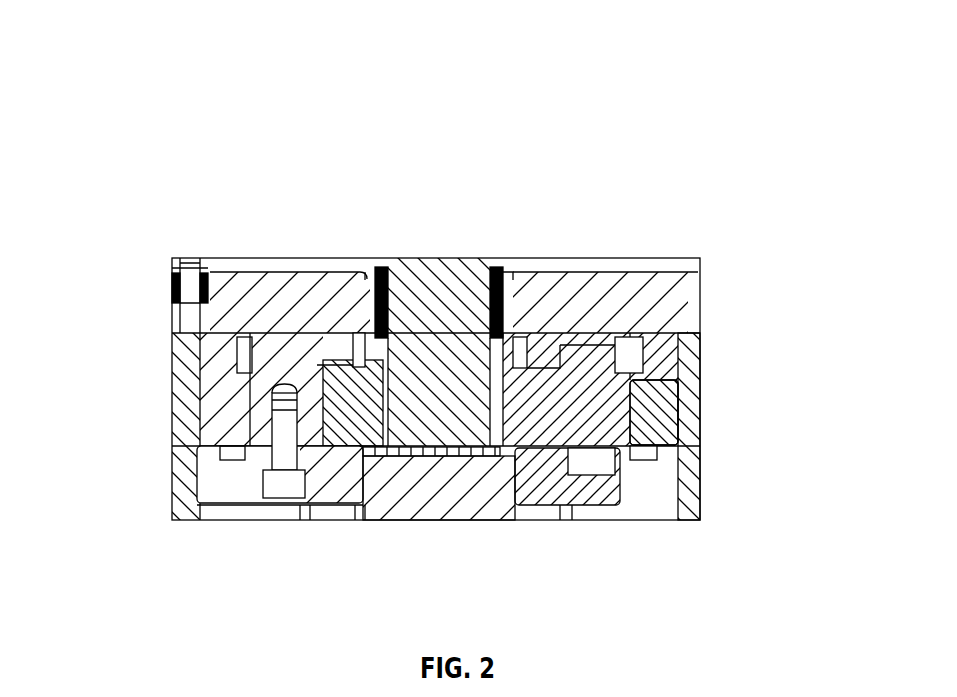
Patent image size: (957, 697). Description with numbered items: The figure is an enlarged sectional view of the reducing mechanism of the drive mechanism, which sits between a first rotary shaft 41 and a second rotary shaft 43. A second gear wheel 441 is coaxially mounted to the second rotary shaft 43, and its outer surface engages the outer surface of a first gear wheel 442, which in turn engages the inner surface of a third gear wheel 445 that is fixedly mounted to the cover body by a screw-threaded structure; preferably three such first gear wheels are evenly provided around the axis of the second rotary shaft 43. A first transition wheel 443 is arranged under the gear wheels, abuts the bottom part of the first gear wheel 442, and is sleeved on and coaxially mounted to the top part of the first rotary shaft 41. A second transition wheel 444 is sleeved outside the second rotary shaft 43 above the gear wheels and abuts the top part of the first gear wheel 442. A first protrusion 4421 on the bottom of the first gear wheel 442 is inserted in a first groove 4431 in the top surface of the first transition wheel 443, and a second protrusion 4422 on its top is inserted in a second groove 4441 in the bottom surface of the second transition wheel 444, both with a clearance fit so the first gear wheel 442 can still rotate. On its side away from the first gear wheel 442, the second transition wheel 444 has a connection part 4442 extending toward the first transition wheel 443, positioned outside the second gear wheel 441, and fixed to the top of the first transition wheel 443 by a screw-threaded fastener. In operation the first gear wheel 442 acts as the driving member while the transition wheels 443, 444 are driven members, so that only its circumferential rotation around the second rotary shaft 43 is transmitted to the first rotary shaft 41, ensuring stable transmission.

The first rotary shaft 41 is at (440, 490).
The second rotary shaft 43 is at (440, 385).
The second gear wheel 441 is at (263, 500).
The first gear wheel 442 is at (583, 402).
The first protrusion 4421 is at (663, 425).
The second protrusion 4422 is at (598, 350).
The first transition wheel 443 is at (570, 498).
The first groove 4431 is at (620, 473).
The second transition wheel 444 is at (318, 362).
The second groove 4441 is at (575, 335).
The connection part 4442 is at (258, 418).
The third gear wheel 445 is at (845, 489).